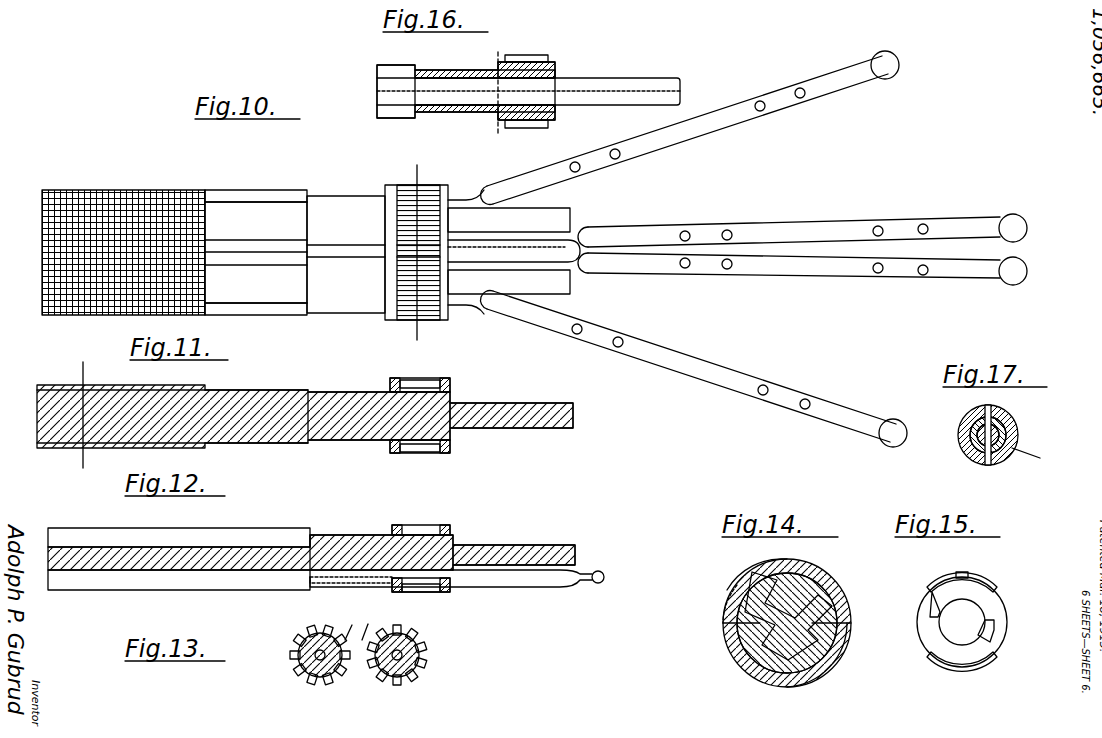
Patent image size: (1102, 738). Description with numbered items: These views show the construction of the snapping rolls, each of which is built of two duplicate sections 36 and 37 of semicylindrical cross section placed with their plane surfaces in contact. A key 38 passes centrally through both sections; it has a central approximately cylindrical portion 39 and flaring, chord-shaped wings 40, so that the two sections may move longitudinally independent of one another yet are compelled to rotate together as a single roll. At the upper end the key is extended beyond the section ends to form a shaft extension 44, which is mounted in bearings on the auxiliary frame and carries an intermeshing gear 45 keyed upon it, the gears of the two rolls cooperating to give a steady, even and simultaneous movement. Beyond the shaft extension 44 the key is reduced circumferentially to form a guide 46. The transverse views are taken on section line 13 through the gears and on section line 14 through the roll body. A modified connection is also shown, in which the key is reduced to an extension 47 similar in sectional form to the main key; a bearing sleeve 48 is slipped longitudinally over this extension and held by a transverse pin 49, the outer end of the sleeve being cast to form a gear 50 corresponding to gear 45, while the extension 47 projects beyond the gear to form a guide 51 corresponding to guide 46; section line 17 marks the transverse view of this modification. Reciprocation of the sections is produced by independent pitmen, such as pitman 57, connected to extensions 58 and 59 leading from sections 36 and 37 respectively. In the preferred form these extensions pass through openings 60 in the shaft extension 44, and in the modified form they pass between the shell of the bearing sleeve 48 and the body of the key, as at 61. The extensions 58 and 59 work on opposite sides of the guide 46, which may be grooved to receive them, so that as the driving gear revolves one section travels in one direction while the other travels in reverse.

In FIG. 10, the section line 13 is at (415, 249).
In FIG. 11, the section line 14 is at (85, 414).
In FIG. 16, the section line 17 is at (499, 92).
In FIG. 10, the roll section 36 is at (293, 190).
In FIG. 11, the roll section 36 is at (204, 444).
In FIG. 14, the roll section 36 is at (845, 648).
In FIG. 10, the roll section 37 is at (190, 190).
In FIG. 11, the roll section 37 is at (130, 386).
In FIG. 14, the roll section 37 is at (845, 600).
In FIG. 12, the key 38 is at (254, 565).
In FIG. 14, the key 38 is at (742, 642).
In FIG. 14, the central cylindrical portion 39 is at (722, 630).
In FIG. 10, the wings 40 is at (243, 205).
In FIG. 11, the wings 40 is at (246, 389).
In FIG. 12, the wings 40 is at (179, 559).
In FIG. 14, the wings 40 is at (748, 576).
In FIG. 15, the wings 40 is at (966, 571).
In FIG. 10, the shaft extension 44 is at (342, 200).
In FIG. 11, the shaft extension 44 is at (362, 441).
In FIG. 12, the shaft extension 44 is at (378, 538).
In FIG. 13, the shaft extension 44 is at (312, 682).
In FIG. 15, the shaft extension 44 is at (1006, 640).
In FIG. 10, the intermeshing gears 45 is at (430, 186).
In FIG. 11, the intermeshing gears 45 is at (398, 380).
In FIG. 12, the intermeshing gears 45 is at (408, 525).
In FIG. 13, the intermeshing gears 45 is at (292, 646).
In FIG. 10, the guide 46 is at (570, 213).
In FIG. 11, the guide 46 is at (519, 404).
In FIG. 12, the guide 46 is at (527, 545).
In FIG. 15, the guide 46 is at (962, 622).
In FIG. 16, the key extension 47 is at (557, 78).
In FIG. 17, the key extension 47 is at (965, 425).
In FIG. 16, the bearing sleeve 48 is at (445, 70).
In FIG. 17, the bearing sleeve 48 is at (962, 447).
In FIG. 16, the transverse pin 49 is at (495, 115).
In FIG. 17, the transverse pin 49 is at (998, 414).
In FIG. 16, the gear 50 is at (524, 60).
In FIG. 17, the gear 50 is at (1036, 459).
In FIG. 16, the guide 51 is at (645, 90).
In FIG. 10, the pitman 57 is at (776, 230).
In FIG. 10, the extension 58 is at (478, 193).
In FIG. 10, the extension 59 is at (536, 266).
In FIG. 12, the extension 59 is at (506, 572).
In FIG. 12, the openings 60 is at (338, 584).
In FIG. 13, the openings 60 is at (356, 682).
In FIG. 15, the openings 60 is at (938, 612).
In FIG. 17, the passage 61 is at (1012, 435).